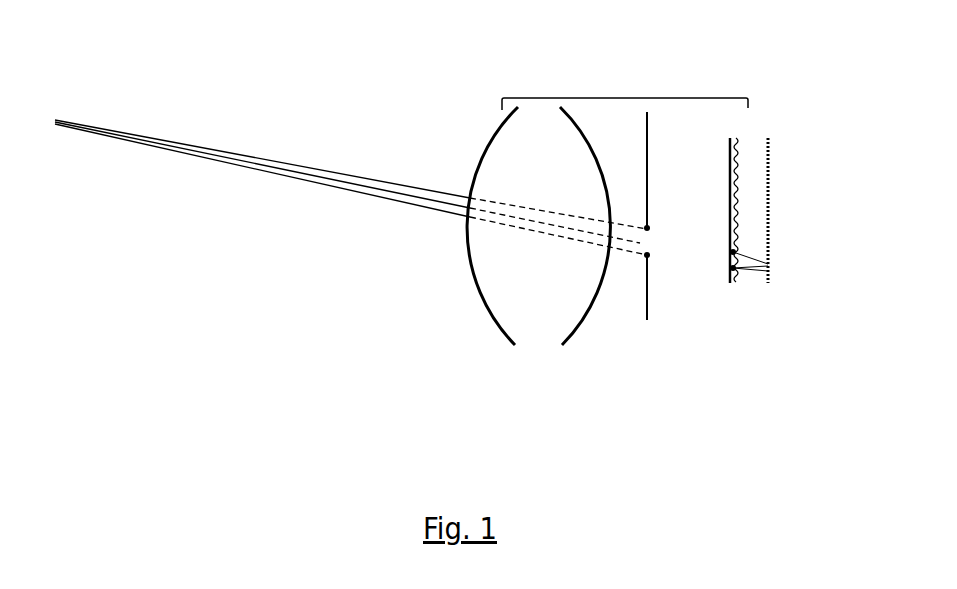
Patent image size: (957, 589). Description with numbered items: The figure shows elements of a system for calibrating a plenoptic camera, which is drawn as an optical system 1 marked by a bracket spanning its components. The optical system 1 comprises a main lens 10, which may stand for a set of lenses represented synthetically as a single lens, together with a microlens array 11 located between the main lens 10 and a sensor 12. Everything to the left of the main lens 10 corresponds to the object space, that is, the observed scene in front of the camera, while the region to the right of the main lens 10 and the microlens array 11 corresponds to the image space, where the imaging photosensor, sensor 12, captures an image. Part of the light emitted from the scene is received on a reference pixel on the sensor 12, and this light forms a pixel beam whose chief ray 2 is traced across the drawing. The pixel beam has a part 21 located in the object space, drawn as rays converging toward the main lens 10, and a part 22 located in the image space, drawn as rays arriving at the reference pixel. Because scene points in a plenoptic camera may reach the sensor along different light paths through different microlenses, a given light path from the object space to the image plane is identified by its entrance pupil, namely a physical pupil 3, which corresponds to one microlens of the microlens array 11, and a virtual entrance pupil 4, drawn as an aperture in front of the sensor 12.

The optical system 1 is at (625, 97).
The chief ray 2 is at (116, 131).
The object-space part of pixel beam 21 is at (100, 138).
The main lens 10 is at (488, 312).
The virtual entrance pupil 4 is at (647, 339).
The microlens array 11 is at (730, 285).
The sensor 12 is at (768, 137).
The physical pupil 3 is at (741, 250).
The image-space part of pixel beam 22 is at (753, 276).